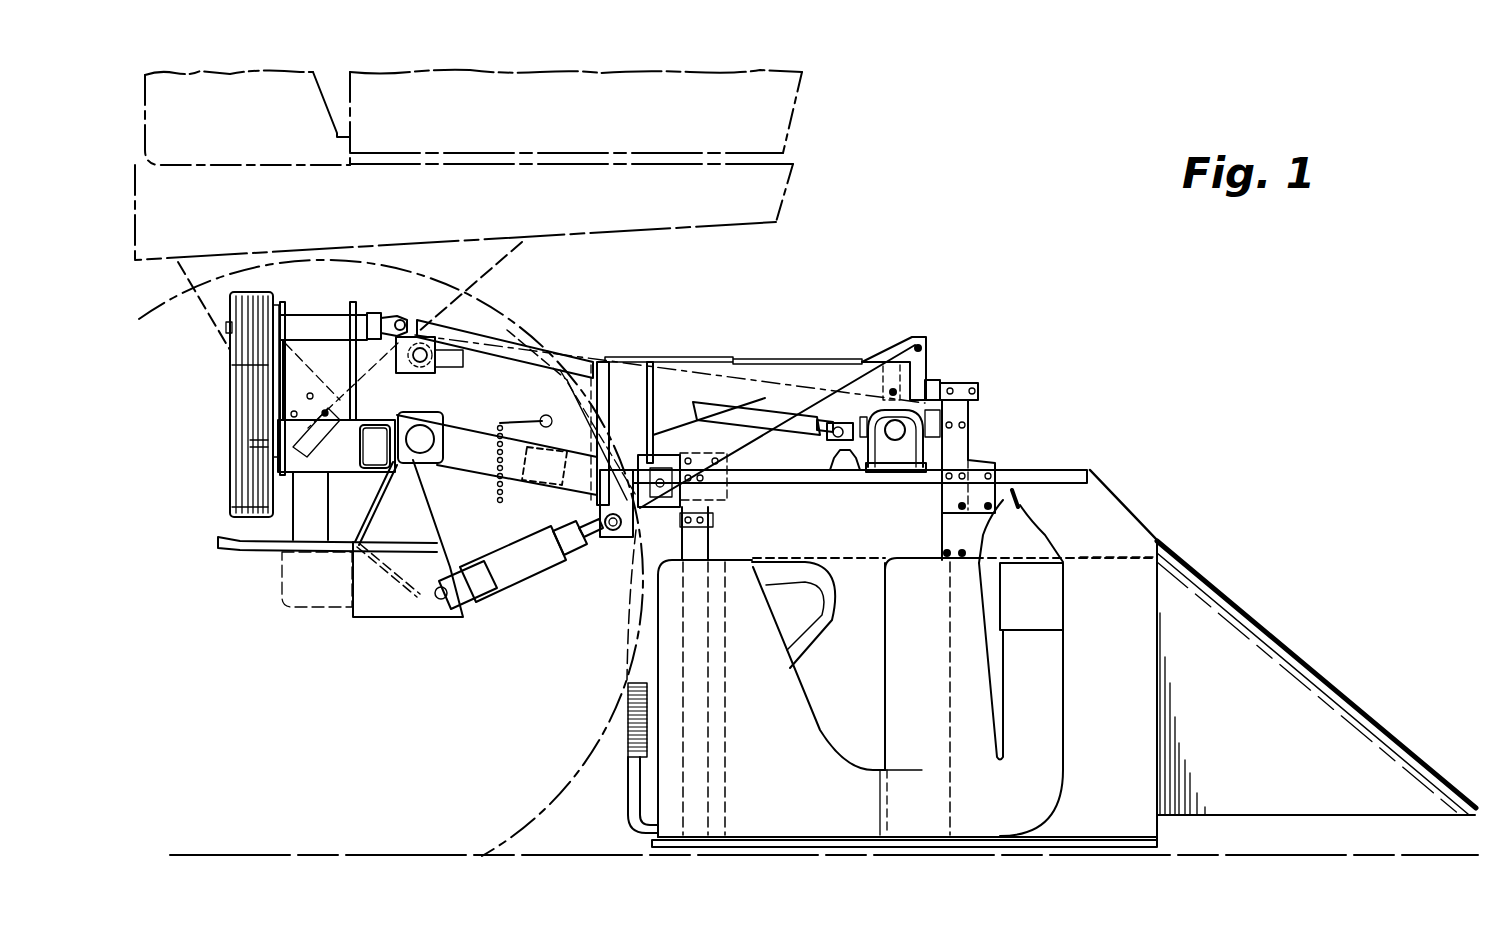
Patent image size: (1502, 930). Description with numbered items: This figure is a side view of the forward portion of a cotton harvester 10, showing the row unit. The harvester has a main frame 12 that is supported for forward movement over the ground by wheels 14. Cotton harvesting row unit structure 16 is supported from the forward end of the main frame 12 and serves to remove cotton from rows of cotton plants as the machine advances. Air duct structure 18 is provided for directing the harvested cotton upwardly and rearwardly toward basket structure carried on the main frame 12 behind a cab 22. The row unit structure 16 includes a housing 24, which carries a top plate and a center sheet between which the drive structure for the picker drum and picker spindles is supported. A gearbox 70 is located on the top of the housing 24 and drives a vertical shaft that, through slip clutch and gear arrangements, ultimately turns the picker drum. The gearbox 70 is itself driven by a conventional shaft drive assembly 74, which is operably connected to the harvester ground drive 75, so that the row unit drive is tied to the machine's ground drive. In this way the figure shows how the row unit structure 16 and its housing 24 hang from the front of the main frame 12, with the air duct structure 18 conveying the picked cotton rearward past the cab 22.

The cotton harvester 10 is at (849, 217).
The main frame 12 is at (302, 520).
The wheels 14 is at (565, 790).
The cotton harvesting row unit structure 16 is at (1258, 487).
The air duct structure 18 is at (1061, 534).
The cab 22 is at (800, 151).
The housing 24 is at (1062, 466).
The gearbox 70 is at (918, 398).
The shaft drive assembly 74 is at (583, 352).
The harvester ground drive 75 is at (209, 502).